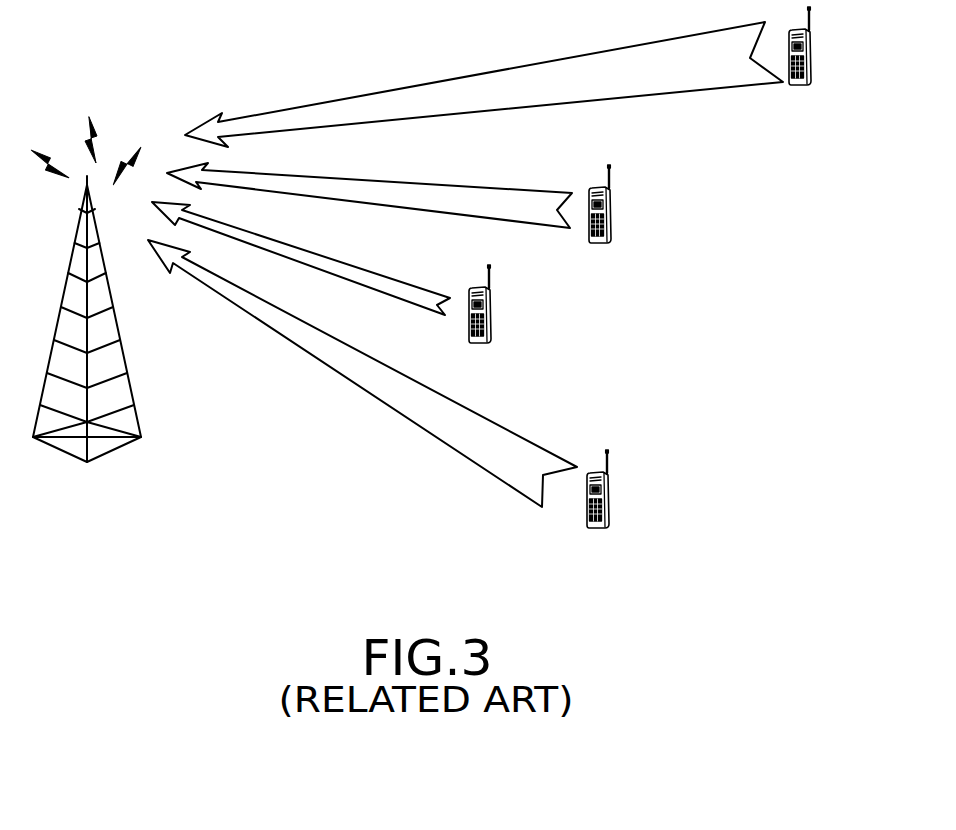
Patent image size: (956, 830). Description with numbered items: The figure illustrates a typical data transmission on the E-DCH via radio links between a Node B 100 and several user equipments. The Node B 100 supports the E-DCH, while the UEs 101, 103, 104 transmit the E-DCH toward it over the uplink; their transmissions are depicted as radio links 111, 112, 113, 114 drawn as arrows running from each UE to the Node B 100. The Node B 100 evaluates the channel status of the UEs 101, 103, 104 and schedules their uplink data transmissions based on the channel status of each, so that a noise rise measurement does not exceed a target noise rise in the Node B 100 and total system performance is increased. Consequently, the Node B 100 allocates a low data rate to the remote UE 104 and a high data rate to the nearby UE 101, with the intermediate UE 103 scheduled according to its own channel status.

The Node B 100 is at (120, 322).
The UE 101 is at (493, 318).
The UE 103 is at (612, 505).
The UE 104 is at (815, 62).
The uplink signal from UE 101 111 is at (338, 258).
The uplink signal from UE 104 112 is at (388, 183).
The uplink signal from UE 103 113 is at (380, 360).
The uplink signal from UE 104 114 is at (493, 73).